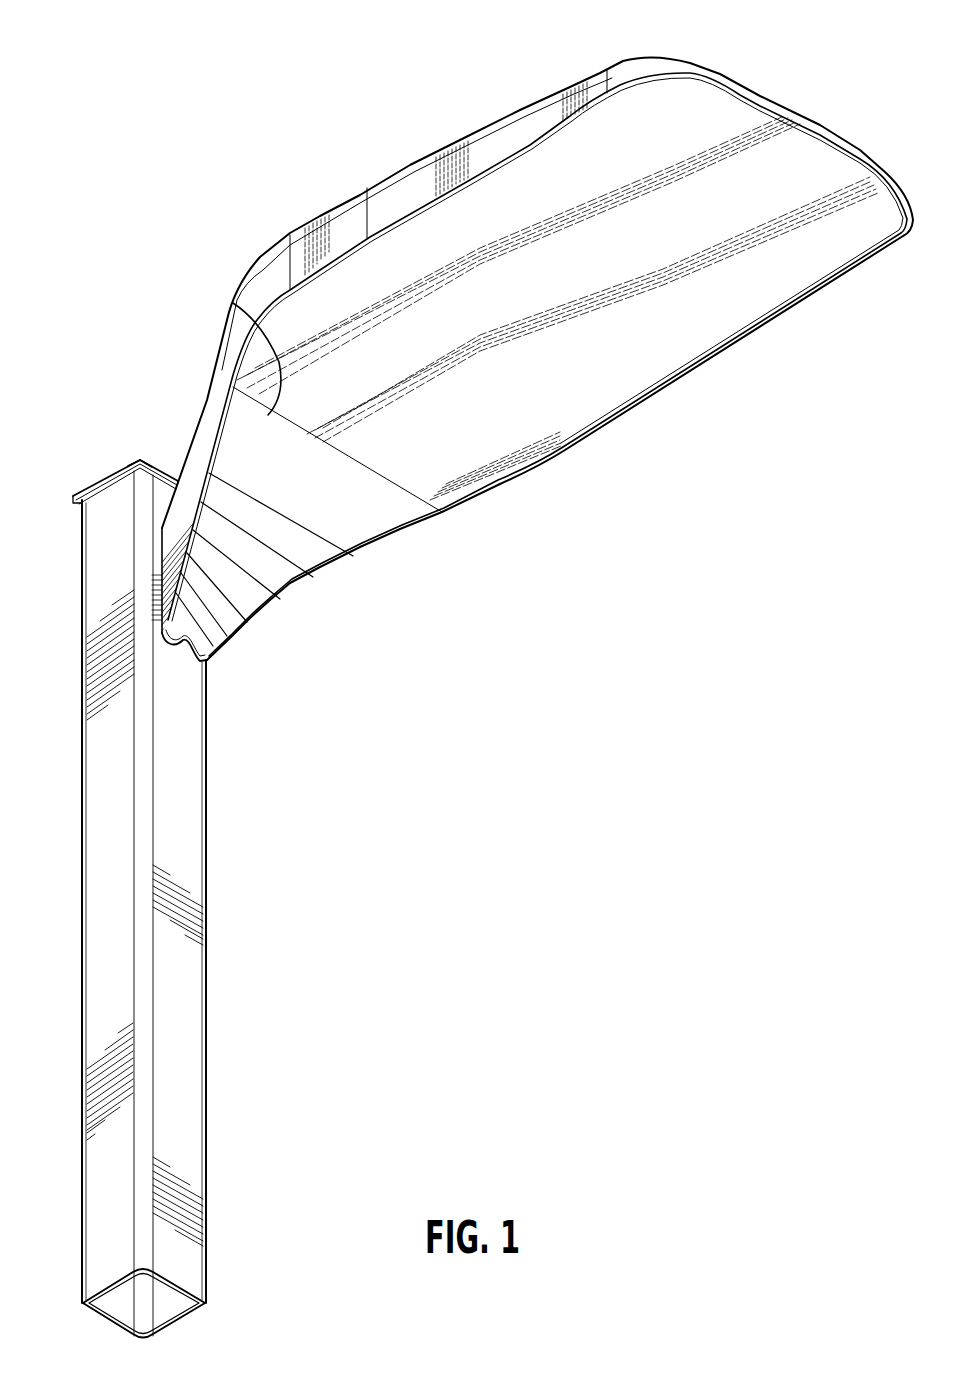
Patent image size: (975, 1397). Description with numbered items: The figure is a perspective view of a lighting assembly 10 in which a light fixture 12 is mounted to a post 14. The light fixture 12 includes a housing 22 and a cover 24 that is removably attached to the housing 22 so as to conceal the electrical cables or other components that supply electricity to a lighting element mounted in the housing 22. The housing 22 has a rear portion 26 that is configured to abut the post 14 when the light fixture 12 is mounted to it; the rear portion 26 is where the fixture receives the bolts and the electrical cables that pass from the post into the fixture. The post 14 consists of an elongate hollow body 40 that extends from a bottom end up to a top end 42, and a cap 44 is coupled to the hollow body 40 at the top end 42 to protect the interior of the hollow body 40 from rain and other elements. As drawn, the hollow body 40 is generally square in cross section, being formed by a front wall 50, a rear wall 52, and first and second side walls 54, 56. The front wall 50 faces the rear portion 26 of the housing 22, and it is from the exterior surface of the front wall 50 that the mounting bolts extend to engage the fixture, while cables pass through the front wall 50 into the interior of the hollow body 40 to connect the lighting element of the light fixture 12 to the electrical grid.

The lighting assembly 10 is at (306, 106).
The light fixture 12 is at (651, 52).
The post 14 is at (74, 788).
The housing 22 is at (791, 110).
The cover 24 is at (233, 303).
The rear portion 26 is at (156, 567).
The hollow body 40 is at (80, 722).
The top end 42 is at (100, 488).
The cap 44 is at (140, 457).
The front wall 50 is at (195, 1124).
The rear wall 52 is at (117, 1300).
The first side wall 54 is at (125, 1209).
The second side wall 56 is at (180, 1300).